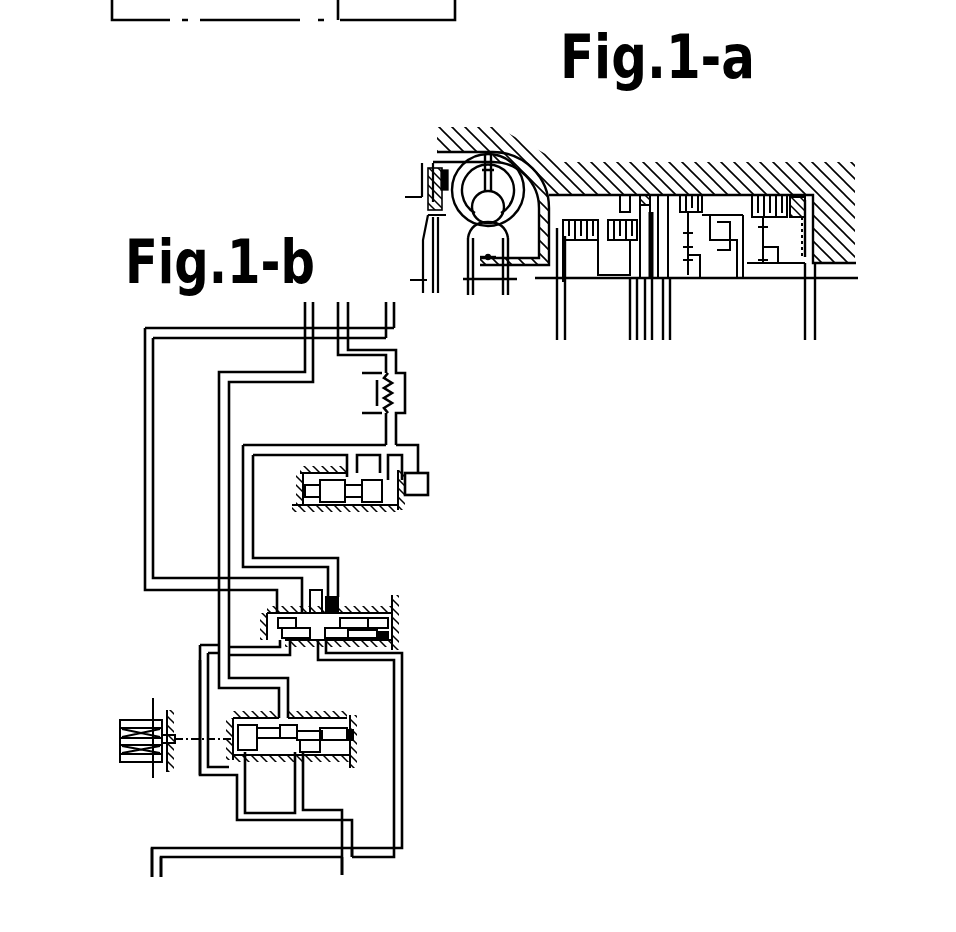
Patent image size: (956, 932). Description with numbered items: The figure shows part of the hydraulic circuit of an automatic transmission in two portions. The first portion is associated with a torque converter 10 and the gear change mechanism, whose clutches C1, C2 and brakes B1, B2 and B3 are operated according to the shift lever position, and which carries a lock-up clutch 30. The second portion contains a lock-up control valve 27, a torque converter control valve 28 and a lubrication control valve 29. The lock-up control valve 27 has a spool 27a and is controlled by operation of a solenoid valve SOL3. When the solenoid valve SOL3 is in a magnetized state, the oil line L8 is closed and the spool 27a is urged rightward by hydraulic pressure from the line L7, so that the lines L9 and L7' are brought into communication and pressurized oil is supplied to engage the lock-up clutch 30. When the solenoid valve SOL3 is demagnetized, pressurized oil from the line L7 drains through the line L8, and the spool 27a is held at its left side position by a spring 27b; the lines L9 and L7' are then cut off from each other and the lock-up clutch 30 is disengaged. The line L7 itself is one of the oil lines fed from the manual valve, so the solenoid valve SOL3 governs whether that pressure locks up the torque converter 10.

In FIG. 1A, the torque converter 10 is at (479, 143).
In FIG. 1A, the lock-up clutch 30 is at (425, 208).
In FIG. 1A, the clutch C1 is at (582, 220).
In FIG. 1A, the clutch C2 is at (618, 212).
In FIG. 1A, the brake B1 is at (778, 193).
In FIG. 1A, the brake B2 is at (717, 193).
In FIG. 1A, the brake B3 is at (635, 193).
In FIG. 1B, the lock-up control valve 27 is at (366, 743).
In FIG. 1B, the spool 27a is at (320, 718).
In FIG. 1B, the spring 27b is at (355, 760).
In FIG. 1B, the torque converter control valve 28 is at (402, 632).
In FIG. 1B, the lubrication control valve 29 is at (408, 514).
In FIG. 1B, the oil line L7 is at (389, 882).
In FIG. 1B, the oil line L7' is at (171, 510).
In FIG. 1B, the oil line L8 is at (200, 778).
In FIG. 1B, the oil line L9 is at (190, 856).
In FIG. 1B, the solenoid valve SOL3 is at (112, 738).